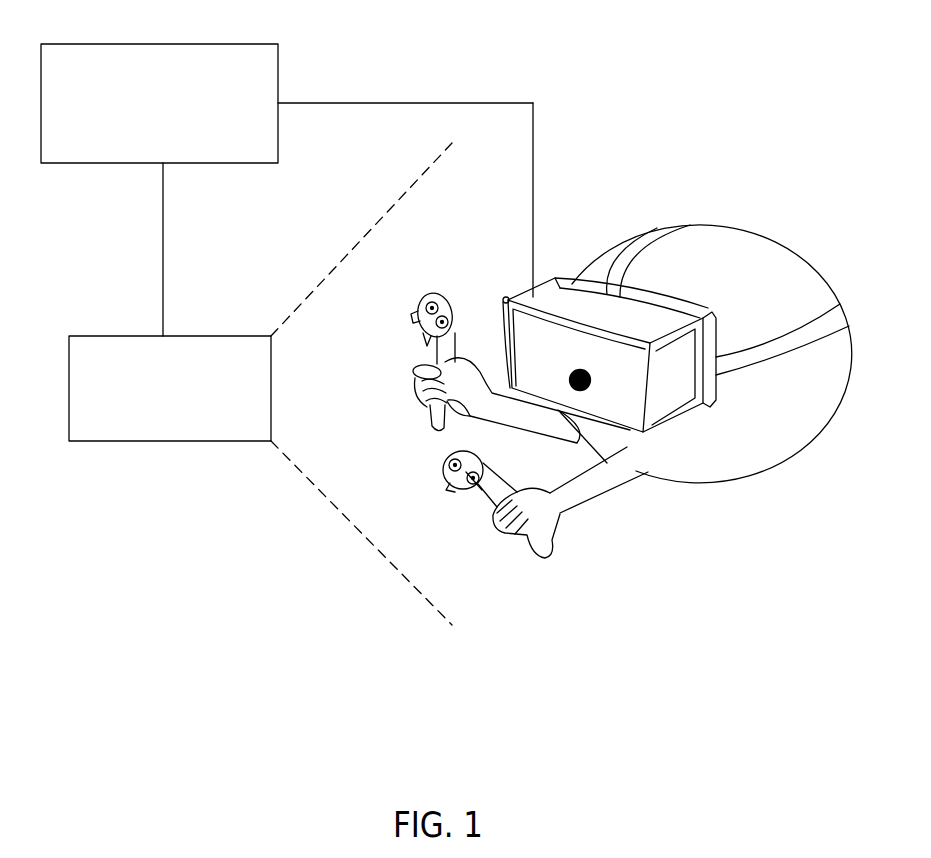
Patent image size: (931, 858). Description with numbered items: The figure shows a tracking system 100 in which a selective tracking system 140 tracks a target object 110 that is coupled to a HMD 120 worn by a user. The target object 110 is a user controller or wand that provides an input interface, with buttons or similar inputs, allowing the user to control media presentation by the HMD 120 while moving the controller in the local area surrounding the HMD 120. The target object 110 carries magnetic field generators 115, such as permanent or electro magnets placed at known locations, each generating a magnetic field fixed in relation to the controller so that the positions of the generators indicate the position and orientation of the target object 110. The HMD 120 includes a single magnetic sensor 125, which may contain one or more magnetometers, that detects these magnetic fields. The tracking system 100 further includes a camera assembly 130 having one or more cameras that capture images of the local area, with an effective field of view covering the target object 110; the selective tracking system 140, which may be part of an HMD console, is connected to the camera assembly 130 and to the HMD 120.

The tracking system 100 is at (465, 26).
The target object 110 is at (445, 467).
The magnetic field generator 115 is at (479, 495).
The HMD 120 is at (647, 332).
The magnetic sensor 125 is at (585, 388).
The camera assembly 130 is at (140, 428).
The selective tracking system 140 is at (138, 143).